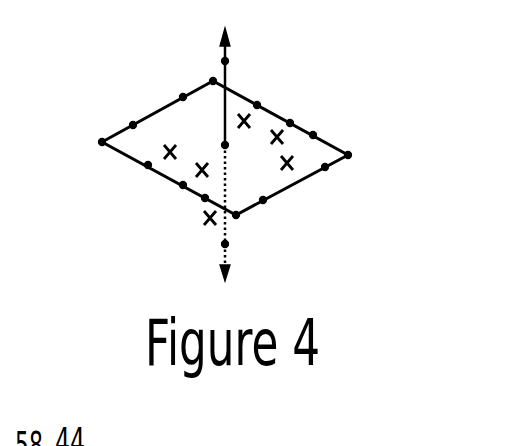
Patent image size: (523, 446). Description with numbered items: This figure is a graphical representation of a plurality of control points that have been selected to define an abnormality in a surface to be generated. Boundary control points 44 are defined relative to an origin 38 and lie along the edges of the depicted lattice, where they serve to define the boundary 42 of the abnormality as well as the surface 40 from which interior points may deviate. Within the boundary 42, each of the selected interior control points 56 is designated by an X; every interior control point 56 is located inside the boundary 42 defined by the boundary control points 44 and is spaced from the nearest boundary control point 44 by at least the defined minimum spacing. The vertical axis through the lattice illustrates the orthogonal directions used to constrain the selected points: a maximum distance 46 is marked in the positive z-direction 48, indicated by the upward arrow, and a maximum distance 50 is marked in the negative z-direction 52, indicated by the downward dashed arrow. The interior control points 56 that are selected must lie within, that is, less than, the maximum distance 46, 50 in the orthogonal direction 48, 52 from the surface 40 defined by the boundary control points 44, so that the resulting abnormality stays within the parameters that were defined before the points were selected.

The origin 38 is at (180, 98).
The surface 40 is at (229, 99).
The boundary 42 is at (327, 137).
The boundary control points 44 is at (225, 145).
The maximum distance in the positive z-direction 46 is at (229, 62).
The positive z-direction 48 is at (229, 48).
The maximum distance in the negative z-direction 50 is at (221, 245).
The negative z-direction 52 is at (229, 255).
The interior control points 56 is at (322, 236).